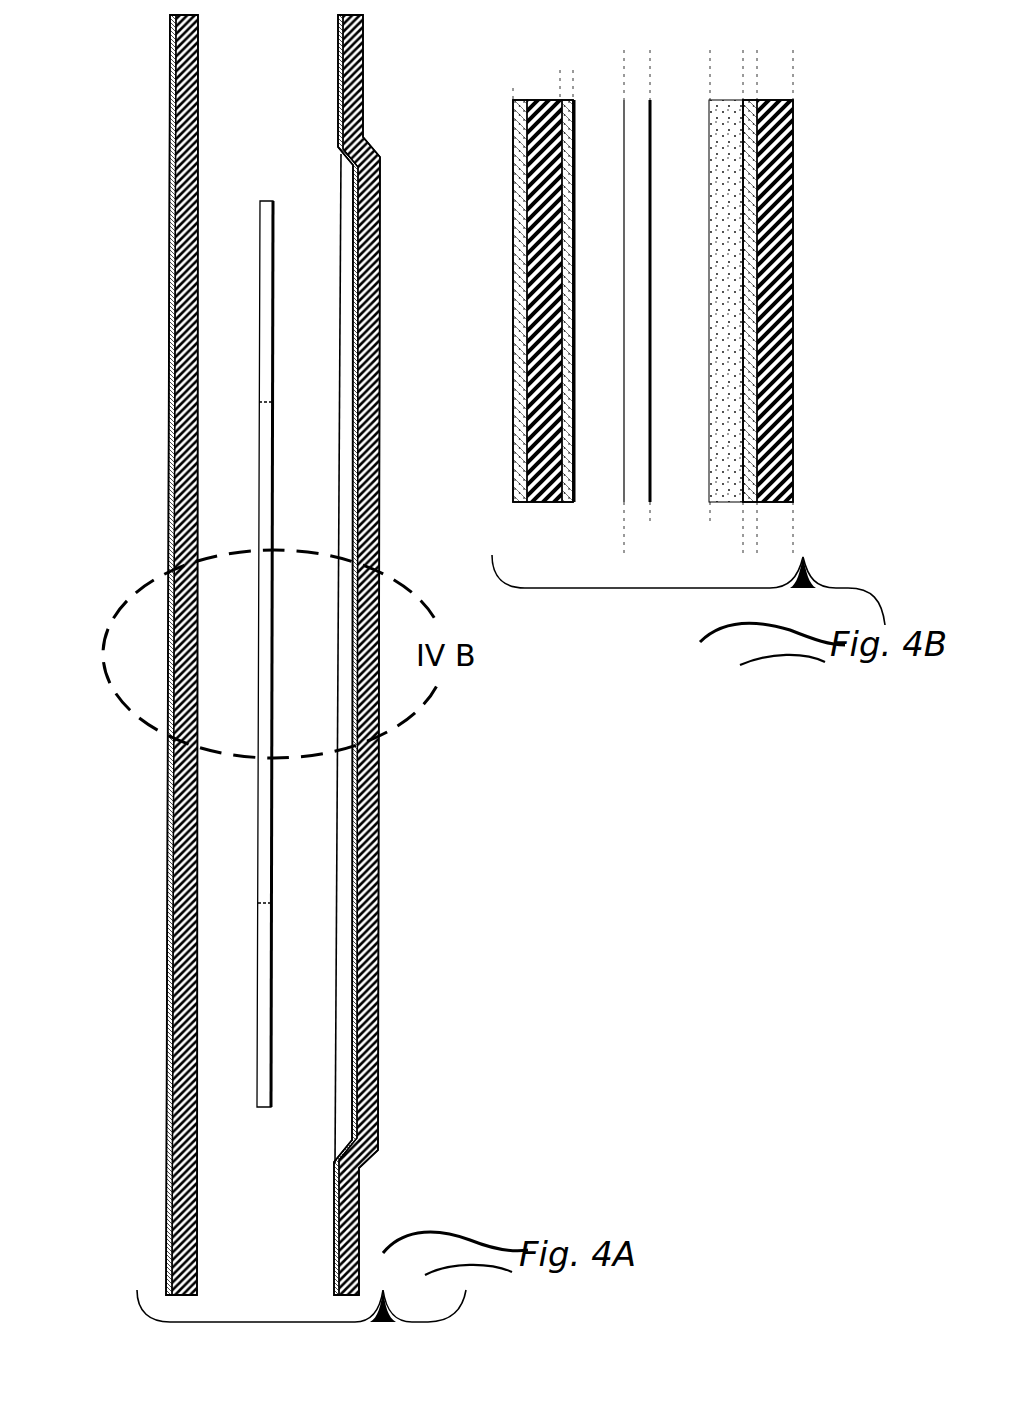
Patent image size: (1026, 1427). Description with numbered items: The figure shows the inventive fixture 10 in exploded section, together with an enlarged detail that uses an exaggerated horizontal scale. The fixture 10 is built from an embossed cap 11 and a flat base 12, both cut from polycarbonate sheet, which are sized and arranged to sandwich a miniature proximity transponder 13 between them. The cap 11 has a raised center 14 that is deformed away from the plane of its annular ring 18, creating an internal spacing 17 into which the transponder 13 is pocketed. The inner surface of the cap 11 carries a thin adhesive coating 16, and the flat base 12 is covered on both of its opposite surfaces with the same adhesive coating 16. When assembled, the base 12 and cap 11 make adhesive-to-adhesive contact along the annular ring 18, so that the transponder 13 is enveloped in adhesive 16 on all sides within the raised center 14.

In FIG. 4A, the fixture 10 is at (254, 651).
In FIG. 4A, the embossed cap 11 is at (378, 148).
In FIG. 4B, the embossed cap 11 is at (793, 190).
In FIG. 4A, the flat base 12 is at (170, 64).
In FIG. 4B, the flat base 12 is at (513, 320).
In FIG. 4A, the miniature proximity transponder 13 is at (276, 212).
In FIG. 4B, the miniature proximity transponder 13 is at (632, 100).
In FIG. 4A, the raised center 14 is at (380, 215).
In FIG. 4B, the raised center 14 is at (793, 218).
In FIG. 4A, the adhesive coating 16 is at (170, 178).
In FIG. 4B, the adhesive coating 16 is at (520, 335).
In FIG. 4A, the internal spacing 17 is at (338, 165).
In FIG. 4B, the internal spacing 17 is at (727, 108).
In FIG. 4A, the annular ring 18 is at (363, 100).